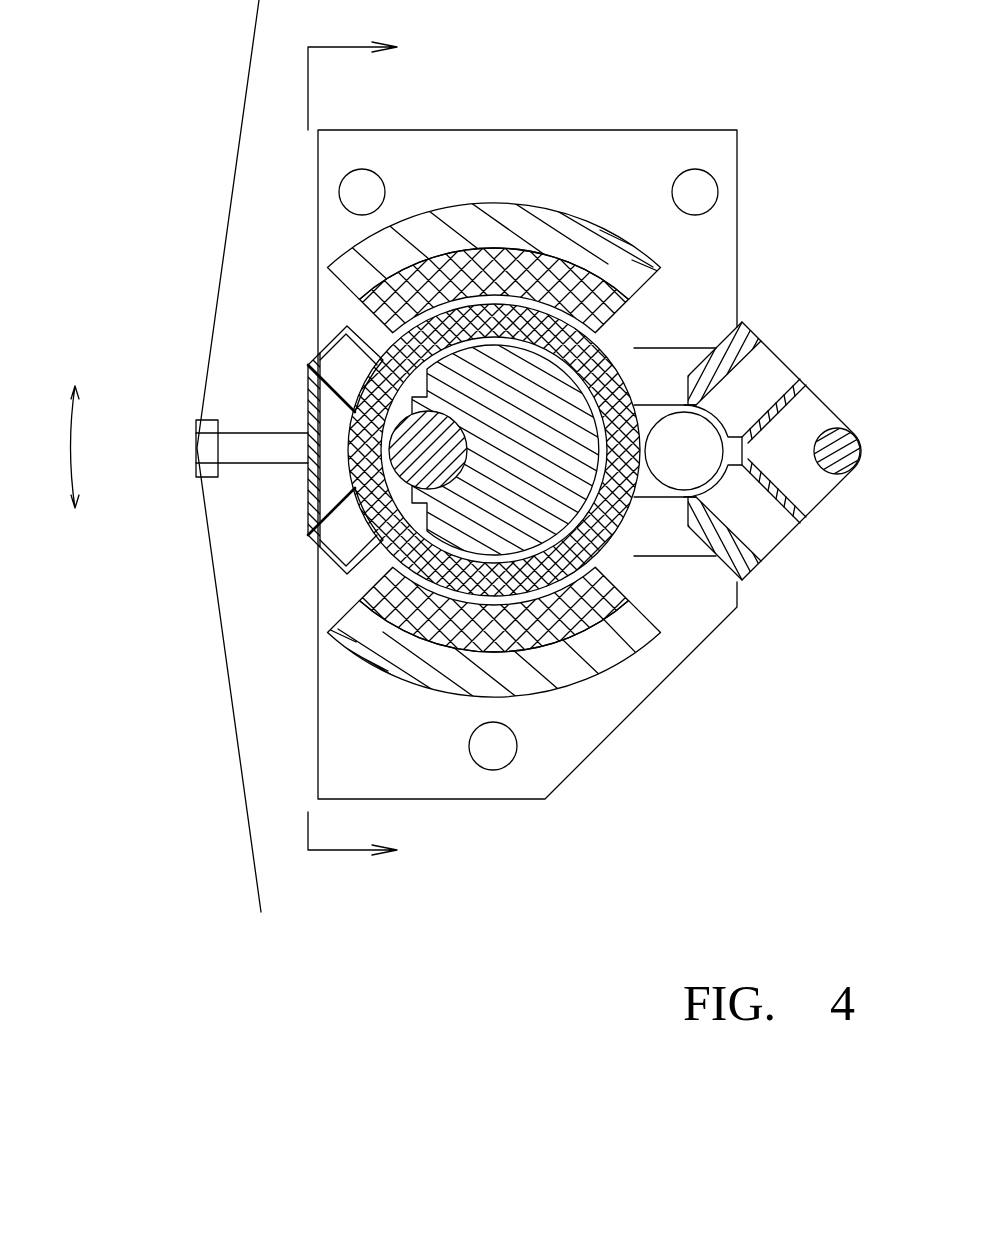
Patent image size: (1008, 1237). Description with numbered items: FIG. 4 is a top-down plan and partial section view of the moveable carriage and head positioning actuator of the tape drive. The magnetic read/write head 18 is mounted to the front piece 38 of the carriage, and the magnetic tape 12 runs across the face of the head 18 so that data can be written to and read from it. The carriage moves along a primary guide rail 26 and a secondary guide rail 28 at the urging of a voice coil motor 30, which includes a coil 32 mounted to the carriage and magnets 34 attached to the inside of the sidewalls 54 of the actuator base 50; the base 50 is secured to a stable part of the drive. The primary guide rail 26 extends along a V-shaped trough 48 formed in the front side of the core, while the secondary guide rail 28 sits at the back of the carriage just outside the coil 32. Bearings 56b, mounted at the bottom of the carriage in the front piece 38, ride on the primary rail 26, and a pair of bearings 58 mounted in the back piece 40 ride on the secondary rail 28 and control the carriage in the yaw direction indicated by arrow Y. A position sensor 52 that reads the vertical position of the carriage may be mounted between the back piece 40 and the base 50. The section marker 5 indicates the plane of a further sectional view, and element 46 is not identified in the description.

The magnetic tape 12 is at (240, 110).
The section line 5- 5 is at (337, 447).
The yaw direction arrow Y is at (58, 447).
The magnetic read/write head 18 is at (202, 447).
The primary guide rail 26 is at (433, 473).
The secondary guide rail 28 is at (676, 420).
The voice coil motor 30 is at (643, 589).
The coil 32 is at (620, 393).
The magnets 34 is at (598, 320).
The front piece 38 is at (313, 407).
The back piece 40 is at (865, 447).
The sleeve 46 is at (595, 513).
The V-shaped trough 48 is at (466, 447).
The actuator base 50 is at (597, 737).
The position sensor 52 is at (873, 407).
The sidewalls 54 is at (593, 237).
The bearings 56b is at (340, 358).
The bearings 58 is at (777, 362).